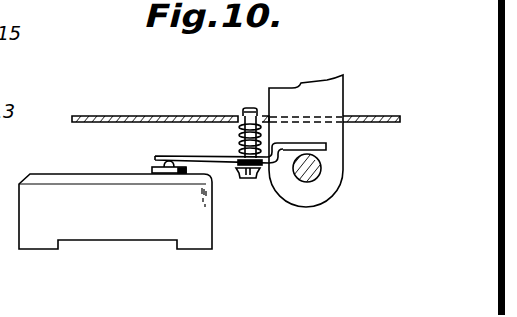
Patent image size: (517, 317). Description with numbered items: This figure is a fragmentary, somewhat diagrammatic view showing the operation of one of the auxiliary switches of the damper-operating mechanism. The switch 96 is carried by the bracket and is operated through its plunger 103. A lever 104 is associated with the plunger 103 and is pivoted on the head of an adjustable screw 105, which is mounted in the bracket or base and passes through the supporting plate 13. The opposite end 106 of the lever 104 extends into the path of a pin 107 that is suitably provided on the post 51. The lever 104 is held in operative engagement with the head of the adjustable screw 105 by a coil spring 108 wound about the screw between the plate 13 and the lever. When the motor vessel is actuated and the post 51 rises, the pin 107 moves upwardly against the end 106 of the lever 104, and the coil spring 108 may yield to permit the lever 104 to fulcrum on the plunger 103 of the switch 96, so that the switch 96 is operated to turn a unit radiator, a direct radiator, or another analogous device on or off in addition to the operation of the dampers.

The table plate 13 is at (143, 116).
The post 51 is at (331, 92).
The switch 96 is at (130, 230).
The plunger 103 is at (160, 166).
The lever 104 is at (196, 156).
The adjustable screw 105 is at (247, 177).
The opposite end of lever 106 is at (317, 143).
The pin 107 is at (311, 173).
The coil spring 108 is at (241, 130).